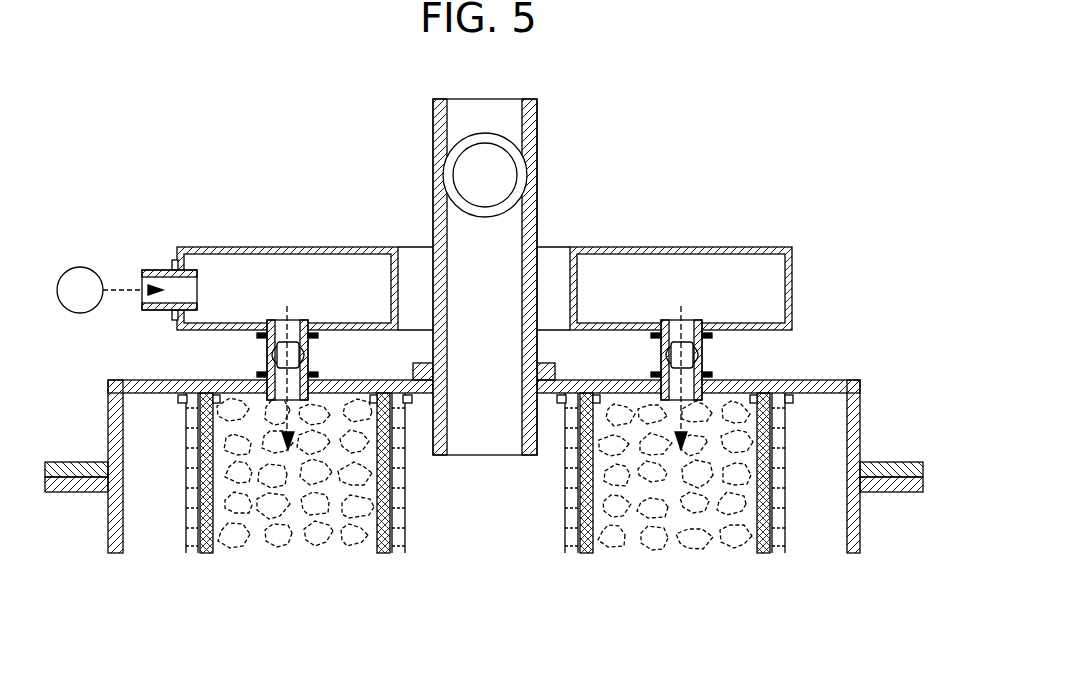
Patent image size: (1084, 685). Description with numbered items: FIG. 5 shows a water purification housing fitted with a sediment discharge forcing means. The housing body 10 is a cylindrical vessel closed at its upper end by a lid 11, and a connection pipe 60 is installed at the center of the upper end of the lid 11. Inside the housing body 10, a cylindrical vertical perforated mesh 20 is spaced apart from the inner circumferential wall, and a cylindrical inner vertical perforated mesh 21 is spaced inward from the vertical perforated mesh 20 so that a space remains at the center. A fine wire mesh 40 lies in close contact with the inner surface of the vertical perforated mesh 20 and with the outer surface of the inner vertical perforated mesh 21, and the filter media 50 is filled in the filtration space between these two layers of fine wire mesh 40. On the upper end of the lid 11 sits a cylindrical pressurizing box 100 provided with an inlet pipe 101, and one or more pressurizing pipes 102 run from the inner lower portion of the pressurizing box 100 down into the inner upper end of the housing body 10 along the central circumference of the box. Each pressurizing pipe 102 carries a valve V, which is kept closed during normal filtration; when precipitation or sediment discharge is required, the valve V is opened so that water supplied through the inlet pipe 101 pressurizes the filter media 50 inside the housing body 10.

The housing body 10 is at (858, 525).
The lid 11 is at (858, 420).
The vertical perforated mesh 20 is at (190, 540).
The inner vertical perforated mesh 21 is at (398, 535).
The fine wire mesh 40 is at (203, 550).
The filter media 50 is at (303, 538).
The connection pipe 60 is at (522, 177).
The pressurizing box 100 is at (257, 248).
The inlet pipe 101 is at (154, 269).
The pressurizing pipe 102 is at (312, 322).
The valve V is at (528, 123).